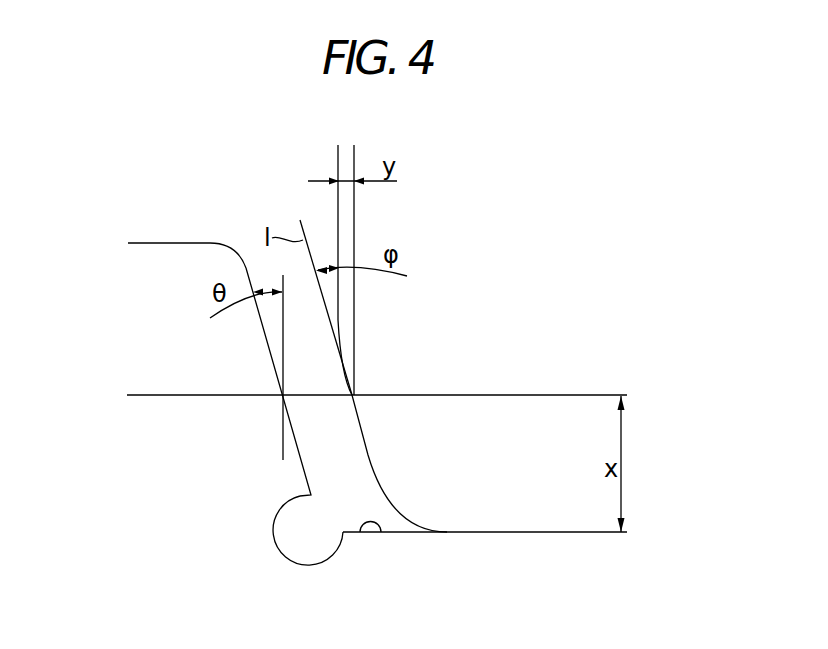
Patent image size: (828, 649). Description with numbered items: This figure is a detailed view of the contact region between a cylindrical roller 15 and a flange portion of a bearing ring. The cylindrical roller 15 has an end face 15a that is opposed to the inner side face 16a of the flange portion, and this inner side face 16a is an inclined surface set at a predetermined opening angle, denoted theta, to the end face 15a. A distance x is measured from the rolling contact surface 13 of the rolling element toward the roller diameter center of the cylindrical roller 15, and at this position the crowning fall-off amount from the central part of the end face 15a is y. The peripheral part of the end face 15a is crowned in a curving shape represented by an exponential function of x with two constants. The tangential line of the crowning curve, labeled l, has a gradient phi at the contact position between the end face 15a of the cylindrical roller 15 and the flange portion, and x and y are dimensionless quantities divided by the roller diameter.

The rolling contact surface 13 is at (379, 532).
The cylindrical roller 15 is at (496, 518).
The end face 15a is at (338, 158).
The inner side face 16a is at (307, 473).